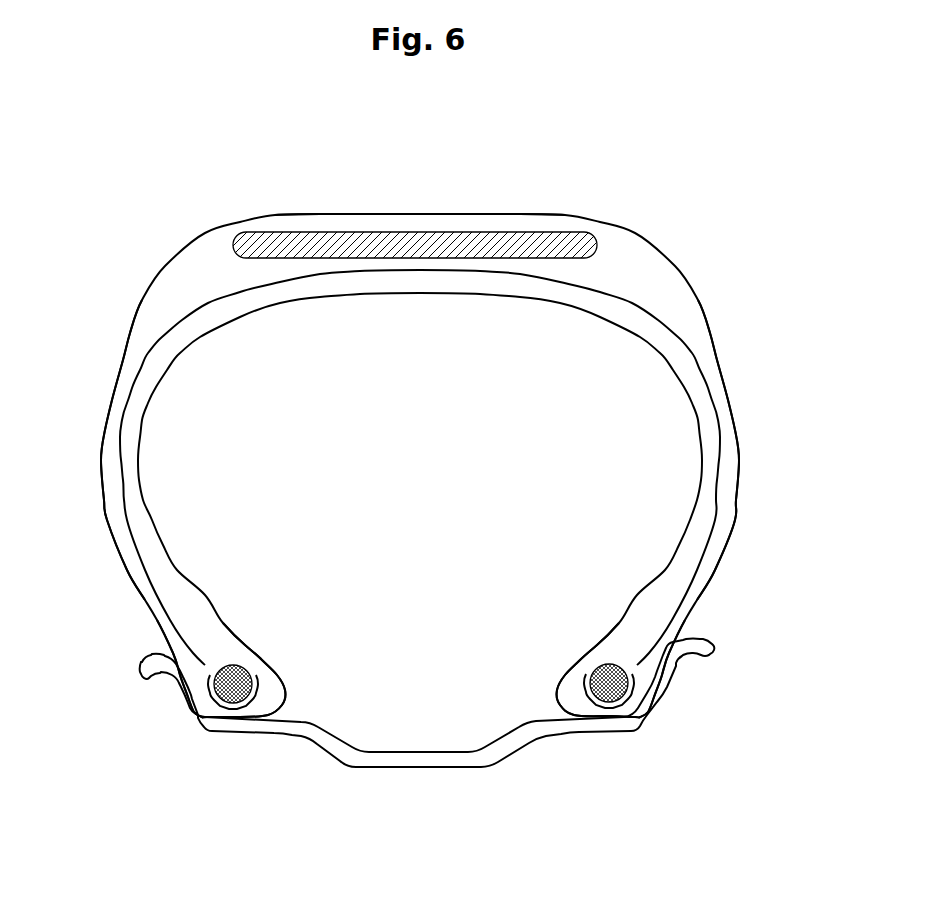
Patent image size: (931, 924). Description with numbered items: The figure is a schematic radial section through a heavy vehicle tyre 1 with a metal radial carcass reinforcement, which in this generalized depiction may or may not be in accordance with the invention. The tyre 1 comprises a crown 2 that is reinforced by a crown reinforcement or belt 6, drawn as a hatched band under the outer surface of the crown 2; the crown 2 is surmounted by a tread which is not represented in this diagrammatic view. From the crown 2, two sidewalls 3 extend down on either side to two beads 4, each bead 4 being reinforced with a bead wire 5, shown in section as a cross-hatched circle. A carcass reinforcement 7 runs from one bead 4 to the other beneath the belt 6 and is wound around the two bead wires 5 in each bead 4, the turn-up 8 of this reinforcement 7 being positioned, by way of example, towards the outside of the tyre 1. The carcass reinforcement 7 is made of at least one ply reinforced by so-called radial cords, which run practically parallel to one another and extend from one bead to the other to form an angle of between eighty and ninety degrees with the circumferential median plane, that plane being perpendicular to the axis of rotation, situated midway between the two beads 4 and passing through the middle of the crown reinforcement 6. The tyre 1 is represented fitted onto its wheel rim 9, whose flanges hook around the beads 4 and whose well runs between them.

The tyre 1 is at (761, 387).
The crown 2 is at (515, 222).
The sidewall 3 is at (108, 462).
The bead 4 is at (267, 707).
The bead wire 5 is at (257, 683).
The crown reinforcement or belt 6 is at (412, 227).
The carcass reinforcement 7 is at (142, 362).
The turn-up 8 is at (207, 662).
The wheel rim 9 is at (195, 690).